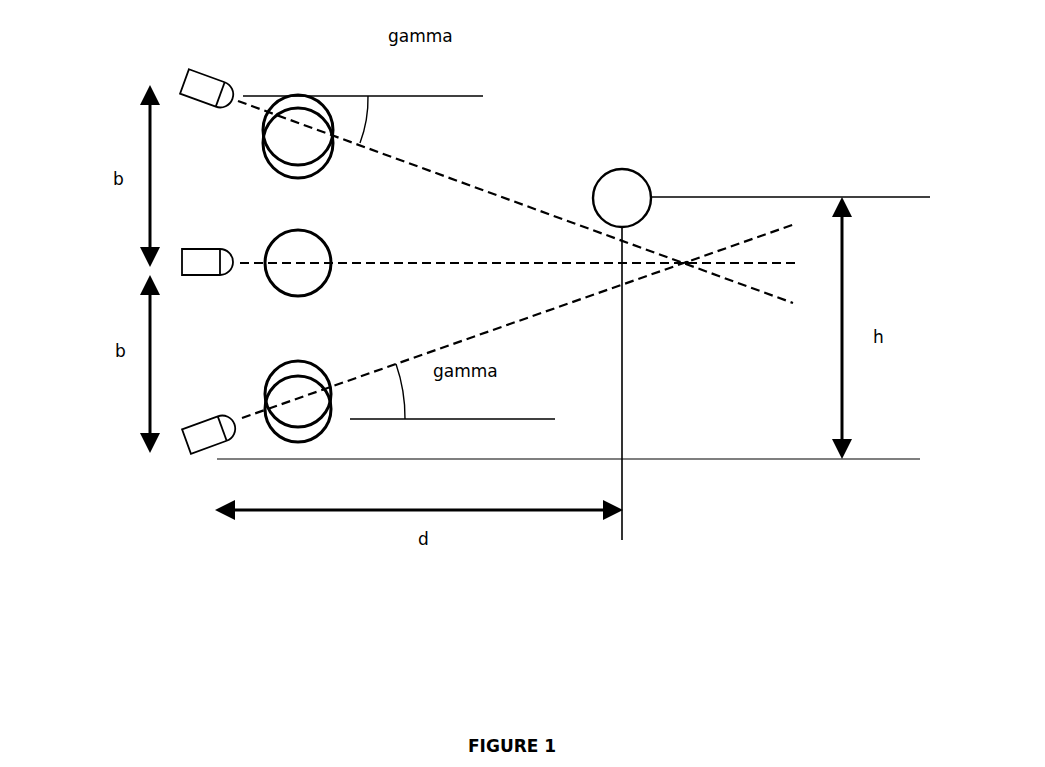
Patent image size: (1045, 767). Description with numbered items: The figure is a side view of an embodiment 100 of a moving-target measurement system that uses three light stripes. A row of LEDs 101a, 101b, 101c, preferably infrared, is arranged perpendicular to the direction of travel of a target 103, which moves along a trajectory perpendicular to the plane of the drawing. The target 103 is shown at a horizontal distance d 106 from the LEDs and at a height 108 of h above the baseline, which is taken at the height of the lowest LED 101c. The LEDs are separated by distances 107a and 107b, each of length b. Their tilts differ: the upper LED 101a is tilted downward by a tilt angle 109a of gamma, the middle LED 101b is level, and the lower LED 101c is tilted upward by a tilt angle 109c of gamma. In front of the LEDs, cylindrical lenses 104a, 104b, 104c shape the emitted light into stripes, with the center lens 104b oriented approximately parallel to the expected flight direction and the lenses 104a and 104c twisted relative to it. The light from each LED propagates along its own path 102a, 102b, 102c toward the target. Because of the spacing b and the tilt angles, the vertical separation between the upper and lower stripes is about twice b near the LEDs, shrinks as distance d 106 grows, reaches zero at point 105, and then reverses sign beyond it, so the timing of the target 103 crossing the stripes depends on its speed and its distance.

The moving-target measurement system 100 is at (795, 105).
The LED 101a is at (210, 70).
The LED 101b is at (190, 248).
The LED 101c is at (202, 415).
The light beam (upper) 102a is at (515, 203).
The light beam (middle) 102b is at (495, 258).
The light beam (lower) 102c is at (548, 312).
The target 103 is at (627, 170).
The cylindrical lens 104a is at (320, 172).
The cylindrical lens 104b is at (328, 278).
The cylindrical lens 104c is at (330, 425).
The point 105 is at (690, 270).
The distance d 106 is at (325, 513).
The distance 107a is at (143, 143).
The distance 107b is at (148, 382).
The height 108 is at (846, 283).
The tilt angle 109a is at (373, 127).
The tilt angle 109c is at (409, 400).